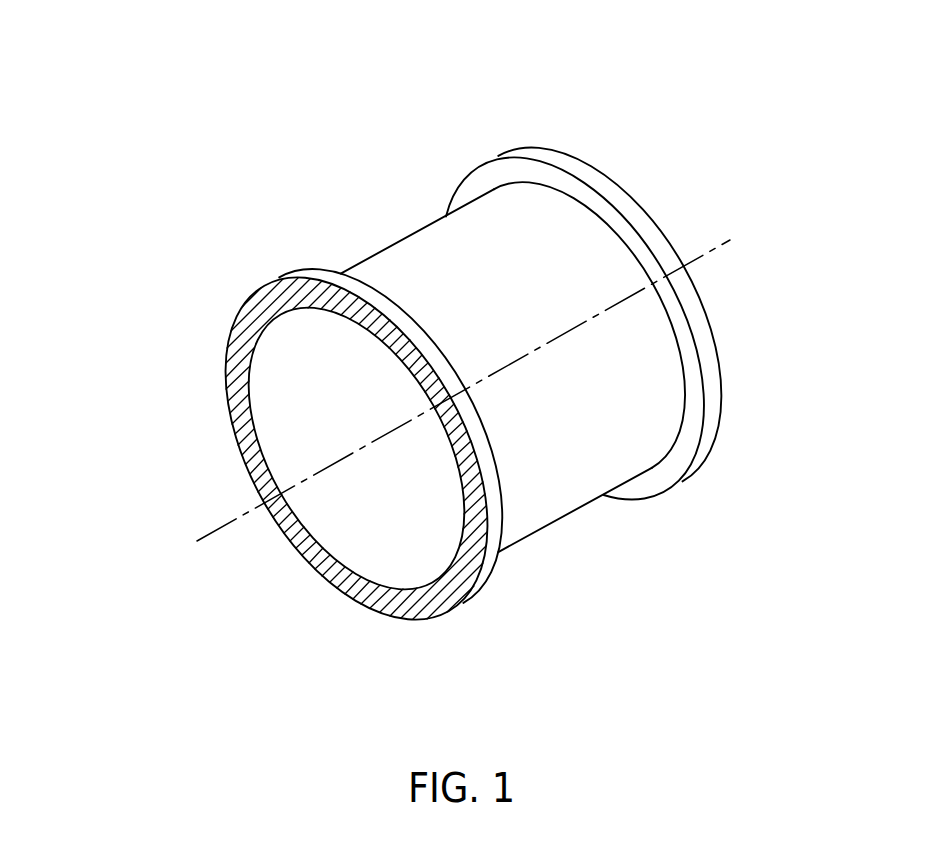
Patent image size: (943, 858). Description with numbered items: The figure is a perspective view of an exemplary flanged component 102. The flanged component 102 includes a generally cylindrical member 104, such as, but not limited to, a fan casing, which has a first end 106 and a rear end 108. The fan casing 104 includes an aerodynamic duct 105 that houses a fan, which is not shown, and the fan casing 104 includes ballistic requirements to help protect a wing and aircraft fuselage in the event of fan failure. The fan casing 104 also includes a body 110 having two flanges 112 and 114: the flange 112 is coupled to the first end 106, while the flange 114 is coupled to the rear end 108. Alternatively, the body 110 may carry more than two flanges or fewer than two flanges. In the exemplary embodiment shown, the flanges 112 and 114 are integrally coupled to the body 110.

The flanged component 102 is at (163, 88).
The cylindrical member 104 is at (568, 515).
The aerodynamic duct 105 is at (385, 548).
The first end 106 is at (456, 608).
The rear end 108 is at (707, 328).
The body 110 is at (580, 252).
The flange 112 is at (258, 293).
The flange 114 is at (543, 155).